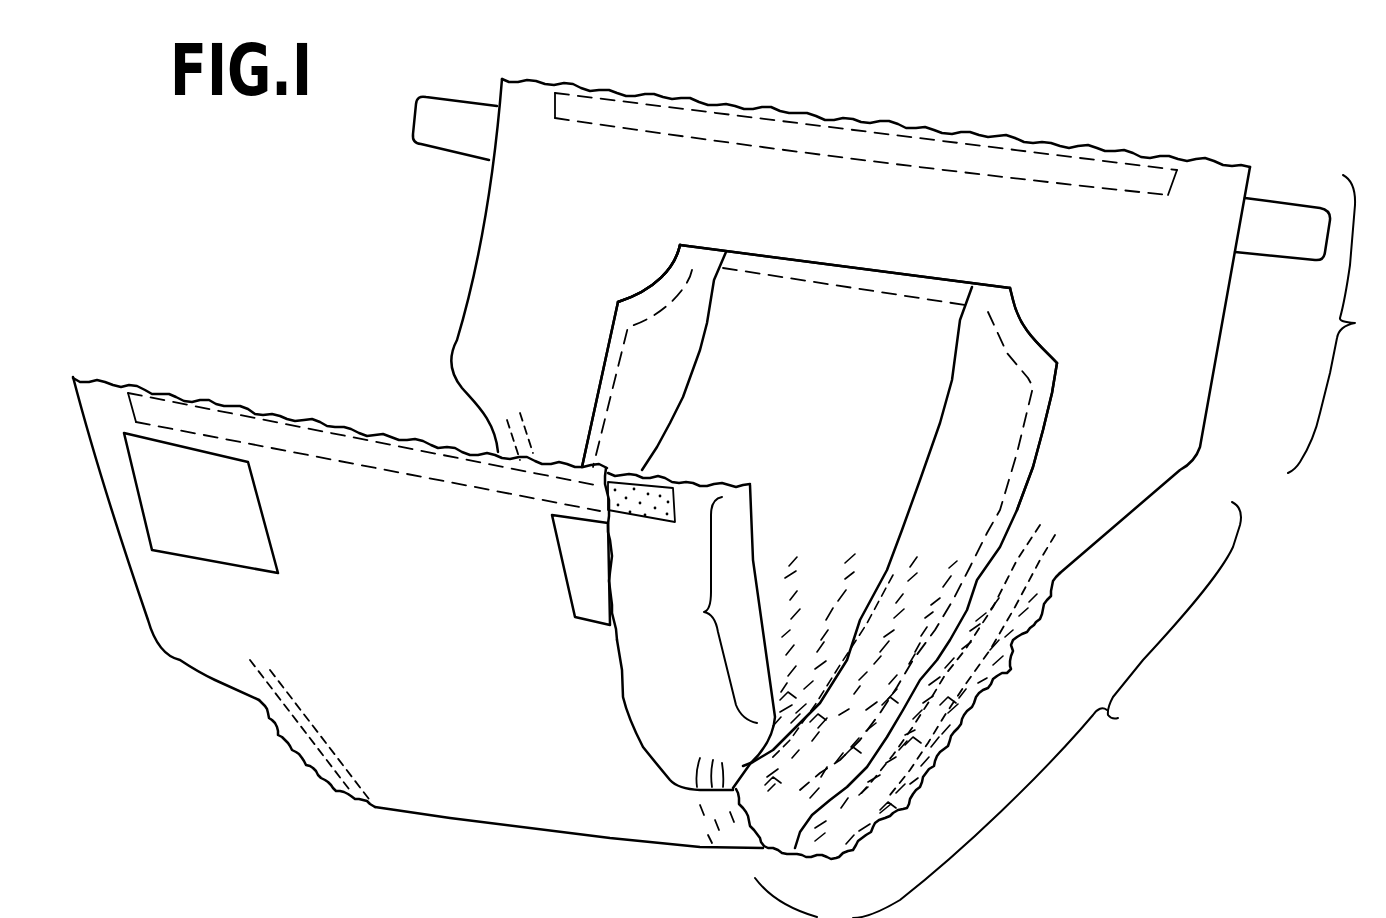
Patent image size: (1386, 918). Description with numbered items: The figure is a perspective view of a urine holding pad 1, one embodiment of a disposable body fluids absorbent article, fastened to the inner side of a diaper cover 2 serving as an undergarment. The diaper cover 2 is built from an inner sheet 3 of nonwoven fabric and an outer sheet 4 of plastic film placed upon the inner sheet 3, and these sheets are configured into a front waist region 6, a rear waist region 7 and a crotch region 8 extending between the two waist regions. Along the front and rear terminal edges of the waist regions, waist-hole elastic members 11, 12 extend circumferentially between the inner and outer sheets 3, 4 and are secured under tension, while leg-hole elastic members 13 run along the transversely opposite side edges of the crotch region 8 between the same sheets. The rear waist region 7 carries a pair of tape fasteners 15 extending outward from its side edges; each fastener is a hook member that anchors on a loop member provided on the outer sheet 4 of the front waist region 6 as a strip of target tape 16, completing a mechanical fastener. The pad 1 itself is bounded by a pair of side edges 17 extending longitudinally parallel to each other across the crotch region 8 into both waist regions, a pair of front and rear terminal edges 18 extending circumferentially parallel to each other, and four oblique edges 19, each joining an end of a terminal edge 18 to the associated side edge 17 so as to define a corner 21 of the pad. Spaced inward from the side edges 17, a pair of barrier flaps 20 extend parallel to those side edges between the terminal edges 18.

The urine holding pad 1 is at (925, 271).
The diaper cover 2 is at (1106, 146).
The inner sheet 3 is at (643, 686).
The outer sheet 4 is at (547, 793).
The front waist region 6 is at (716, 610).
The rear waist region 7 is at (1332, 324).
The crotch region 8 is at (998, 710).
The waist-hole elastic member 11 is at (645, 508).
The waist-hole elastic member 12 is at (917, 150).
The leg-hole elastic members 13 is at (293, 748).
The tape fasteners 15 is at (447, 142).
The target tape 16 is at (160, 538).
The side edges 17 is at (609, 337).
The front and rear terminal edges 18 is at (827, 263).
The oblique edges 19 is at (672, 258).
The barrier flaps 20 is at (658, 395).
The corner 21 is at (662, 314).